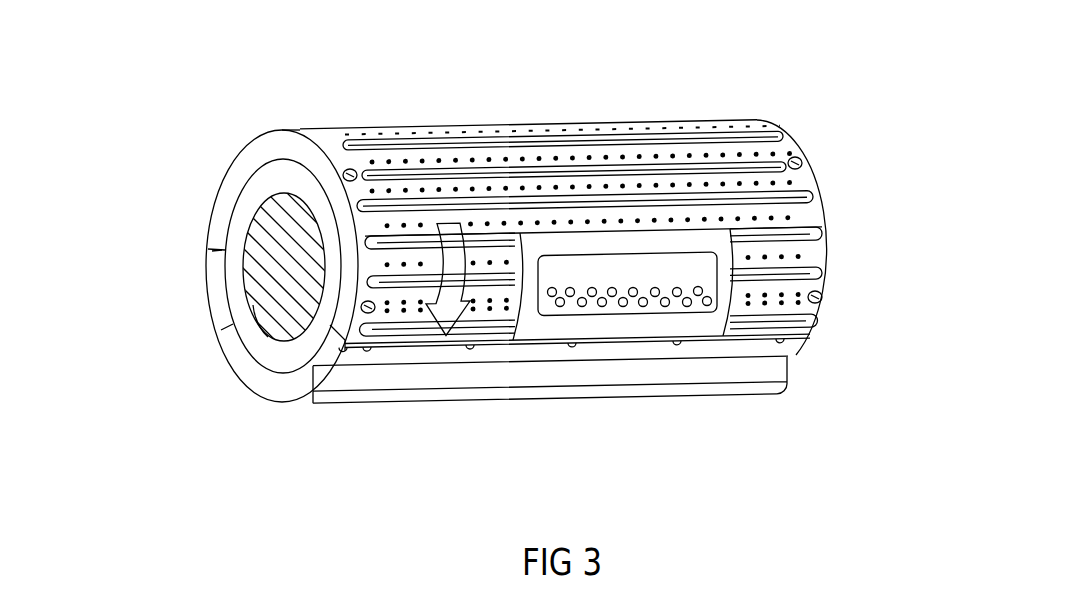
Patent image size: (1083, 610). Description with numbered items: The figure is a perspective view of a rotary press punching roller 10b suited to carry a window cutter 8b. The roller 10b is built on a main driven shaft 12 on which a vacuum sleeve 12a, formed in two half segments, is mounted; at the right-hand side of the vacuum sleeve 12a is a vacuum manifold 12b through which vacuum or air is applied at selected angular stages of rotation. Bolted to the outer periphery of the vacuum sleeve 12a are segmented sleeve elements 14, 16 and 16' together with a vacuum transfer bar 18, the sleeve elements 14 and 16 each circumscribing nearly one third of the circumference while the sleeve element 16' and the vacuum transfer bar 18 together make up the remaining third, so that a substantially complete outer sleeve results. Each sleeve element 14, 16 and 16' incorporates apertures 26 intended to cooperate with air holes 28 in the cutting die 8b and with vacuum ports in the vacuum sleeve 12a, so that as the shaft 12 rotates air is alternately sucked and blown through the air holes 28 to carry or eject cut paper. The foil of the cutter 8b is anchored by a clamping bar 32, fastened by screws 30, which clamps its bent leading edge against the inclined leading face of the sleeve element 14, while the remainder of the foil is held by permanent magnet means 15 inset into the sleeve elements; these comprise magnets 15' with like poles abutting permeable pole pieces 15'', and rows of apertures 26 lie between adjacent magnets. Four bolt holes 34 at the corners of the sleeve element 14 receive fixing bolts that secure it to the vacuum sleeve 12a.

The window cutter 8b is at (627, 343).
The punching roller 10b is at (787, 122).
The main driven shaft 12 is at (260, 242).
The vacuum sleeve 12a is at (280, 178).
The vacuum manifold 12b is at (790, 347).
The sleeve element 14 is at (822, 257).
The permanent magnet means 15 is at (646, 229).
The magnets 15' is at (653, 259).
The permeable pole pieces 15'' is at (645, 263).
The sleeve element 16 is at (282, 224).
The sleeve element 16' is at (166, 313).
The vacuum transfer bar 18 is at (275, 395).
The apertures 26 is at (508, 130).
The air holes 28 is at (561, 307).
The screws 30 is at (472, 347).
The clamping bar 32 is at (345, 345).
The bolt holes 34 is at (345, 170).